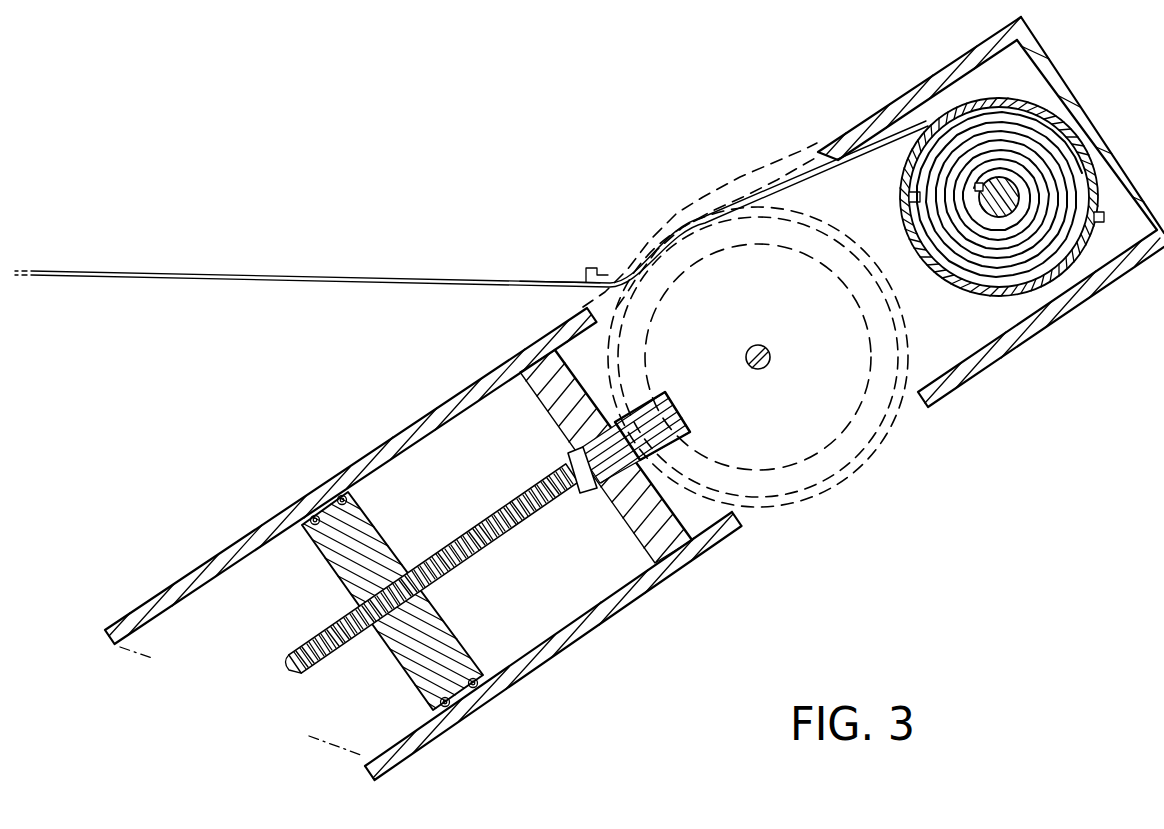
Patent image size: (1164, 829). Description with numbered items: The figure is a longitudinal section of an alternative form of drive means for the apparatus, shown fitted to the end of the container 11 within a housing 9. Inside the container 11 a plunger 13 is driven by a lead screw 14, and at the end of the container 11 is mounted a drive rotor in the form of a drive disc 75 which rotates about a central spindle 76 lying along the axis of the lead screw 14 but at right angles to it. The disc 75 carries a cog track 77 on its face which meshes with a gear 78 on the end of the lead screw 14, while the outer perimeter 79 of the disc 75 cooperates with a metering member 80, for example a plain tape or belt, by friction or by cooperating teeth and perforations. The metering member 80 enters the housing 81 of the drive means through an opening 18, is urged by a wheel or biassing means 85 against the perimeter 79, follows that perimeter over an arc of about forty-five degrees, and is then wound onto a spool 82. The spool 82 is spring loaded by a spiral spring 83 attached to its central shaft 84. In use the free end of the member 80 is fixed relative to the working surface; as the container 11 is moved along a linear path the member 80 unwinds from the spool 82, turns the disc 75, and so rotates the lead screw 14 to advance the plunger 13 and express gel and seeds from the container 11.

The housing 9 is at (1027, 348).
The container 11 is at (543, 661).
The plunger 13 is at (405, 680).
The lead screw 14 is at (506, 548).
The opening 18 is at (566, 273).
The drive disc 75 is at (758, 357).
The central spindle 76 is at (770, 348).
The cog track 77 is at (850, 462).
The gear 78 is at (666, 393).
The outer perimeter 79 is at (790, 495).
The metering member 80 is at (343, 284).
The housing 81 is at (897, 100).
The spool 82 is at (998, 287).
The spiral spring 83 is at (1073, 182).
The central shaft 84 is at (987, 200).
The biassing means 85 is at (604, 262).